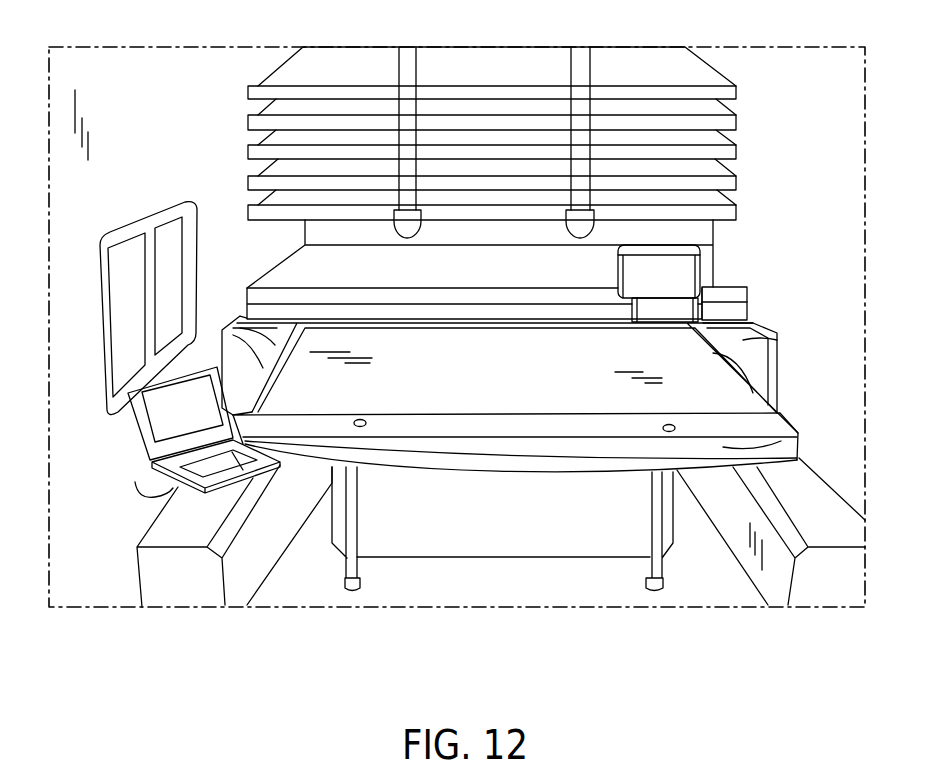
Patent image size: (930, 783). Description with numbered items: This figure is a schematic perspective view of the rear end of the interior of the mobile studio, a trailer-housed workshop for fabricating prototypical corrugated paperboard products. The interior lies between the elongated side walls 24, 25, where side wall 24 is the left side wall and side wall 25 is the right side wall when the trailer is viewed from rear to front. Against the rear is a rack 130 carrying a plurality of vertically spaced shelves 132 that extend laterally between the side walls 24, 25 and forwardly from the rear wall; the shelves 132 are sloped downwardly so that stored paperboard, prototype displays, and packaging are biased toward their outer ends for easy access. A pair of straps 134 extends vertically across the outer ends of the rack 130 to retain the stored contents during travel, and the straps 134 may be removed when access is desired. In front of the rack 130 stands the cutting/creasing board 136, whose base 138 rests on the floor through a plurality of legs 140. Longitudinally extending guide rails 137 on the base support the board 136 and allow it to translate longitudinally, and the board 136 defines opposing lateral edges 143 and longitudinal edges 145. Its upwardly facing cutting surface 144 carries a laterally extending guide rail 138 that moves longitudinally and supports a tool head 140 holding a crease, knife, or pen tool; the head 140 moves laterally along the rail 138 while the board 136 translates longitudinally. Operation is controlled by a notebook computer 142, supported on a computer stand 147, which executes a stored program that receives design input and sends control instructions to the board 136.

The left side wall 24 is at (839, 88).
The right side wall 25 is at (184, 96).
The rack 130 is at (208, 146).
The shelves 132 is at (736, 91).
The straps 134 is at (408, 56).
The cutting/creasing board 136 is at (787, 328).
The guide rails 137 is at (230, 330).
The guide rail 138 is at (752, 294).
The tool head 140 is at (697, 262).
The computer 142 is at (137, 438).
The lateral edges 143 is at (445, 428).
The cutting surface 144 is at (549, 372).
The longitudinal edges 145 is at (238, 326).
The computer stand 147 is at (140, 508).